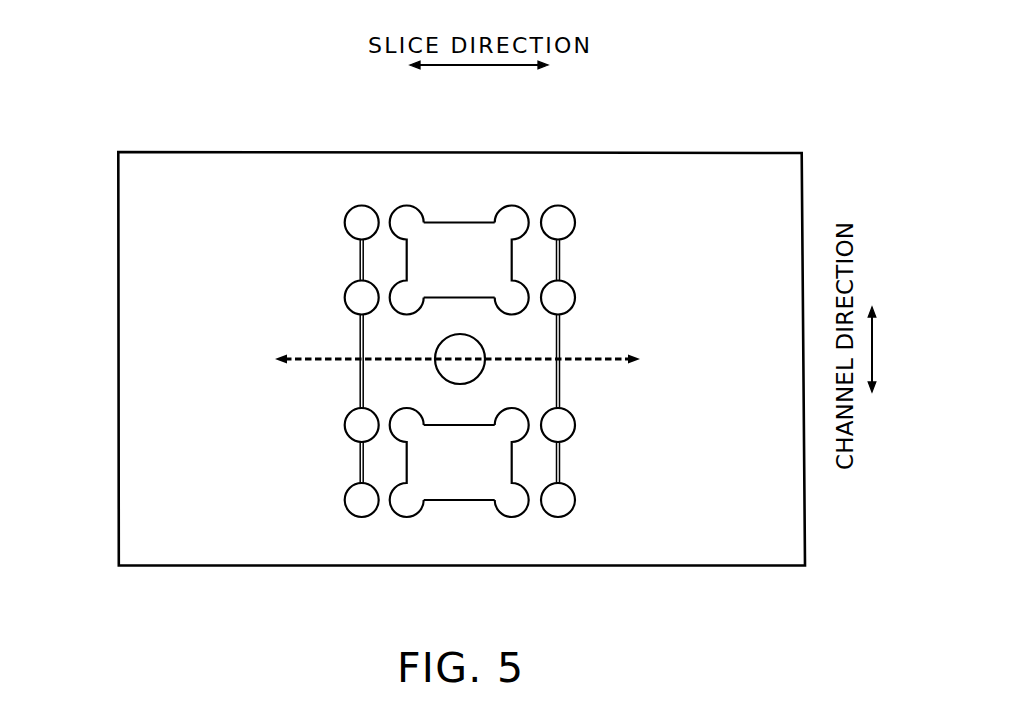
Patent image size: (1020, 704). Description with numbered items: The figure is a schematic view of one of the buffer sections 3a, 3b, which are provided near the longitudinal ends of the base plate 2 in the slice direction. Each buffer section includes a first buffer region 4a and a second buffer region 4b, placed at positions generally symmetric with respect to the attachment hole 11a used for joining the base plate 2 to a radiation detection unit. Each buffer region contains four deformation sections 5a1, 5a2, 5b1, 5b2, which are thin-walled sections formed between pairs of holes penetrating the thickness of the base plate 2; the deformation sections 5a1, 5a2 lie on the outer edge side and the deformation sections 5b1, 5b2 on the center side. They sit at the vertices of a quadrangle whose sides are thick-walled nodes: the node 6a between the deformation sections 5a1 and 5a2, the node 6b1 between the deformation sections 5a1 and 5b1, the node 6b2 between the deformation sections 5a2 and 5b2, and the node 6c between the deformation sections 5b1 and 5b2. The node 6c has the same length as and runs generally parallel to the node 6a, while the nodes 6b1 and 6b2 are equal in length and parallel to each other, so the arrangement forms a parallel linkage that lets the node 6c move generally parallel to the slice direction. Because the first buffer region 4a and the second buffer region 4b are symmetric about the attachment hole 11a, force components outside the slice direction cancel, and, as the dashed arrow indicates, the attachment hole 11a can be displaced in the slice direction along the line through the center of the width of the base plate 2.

The base plate 2 is at (138, 542).
The buffer section 3a is at (768, 72).
The buffer section 3b is at (430, 318).
The first buffer region 4a is at (467, 203).
The second buffer region 4b is at (472, 518).
The deformation section 5a1 is at (542, 222).
The deformation section 5a2 is at (376, 222).
The deformation section 5b1 is at (542, 298).
The deformation section 5b2 is at (376, 298).
The node 6a is at (452, 212).
The node 6b1 is at (537, 257).
The node 6b2 is at (383, 258).
The node 6c is at (460, 305).
The attachment hole 11a is at (437, 361).